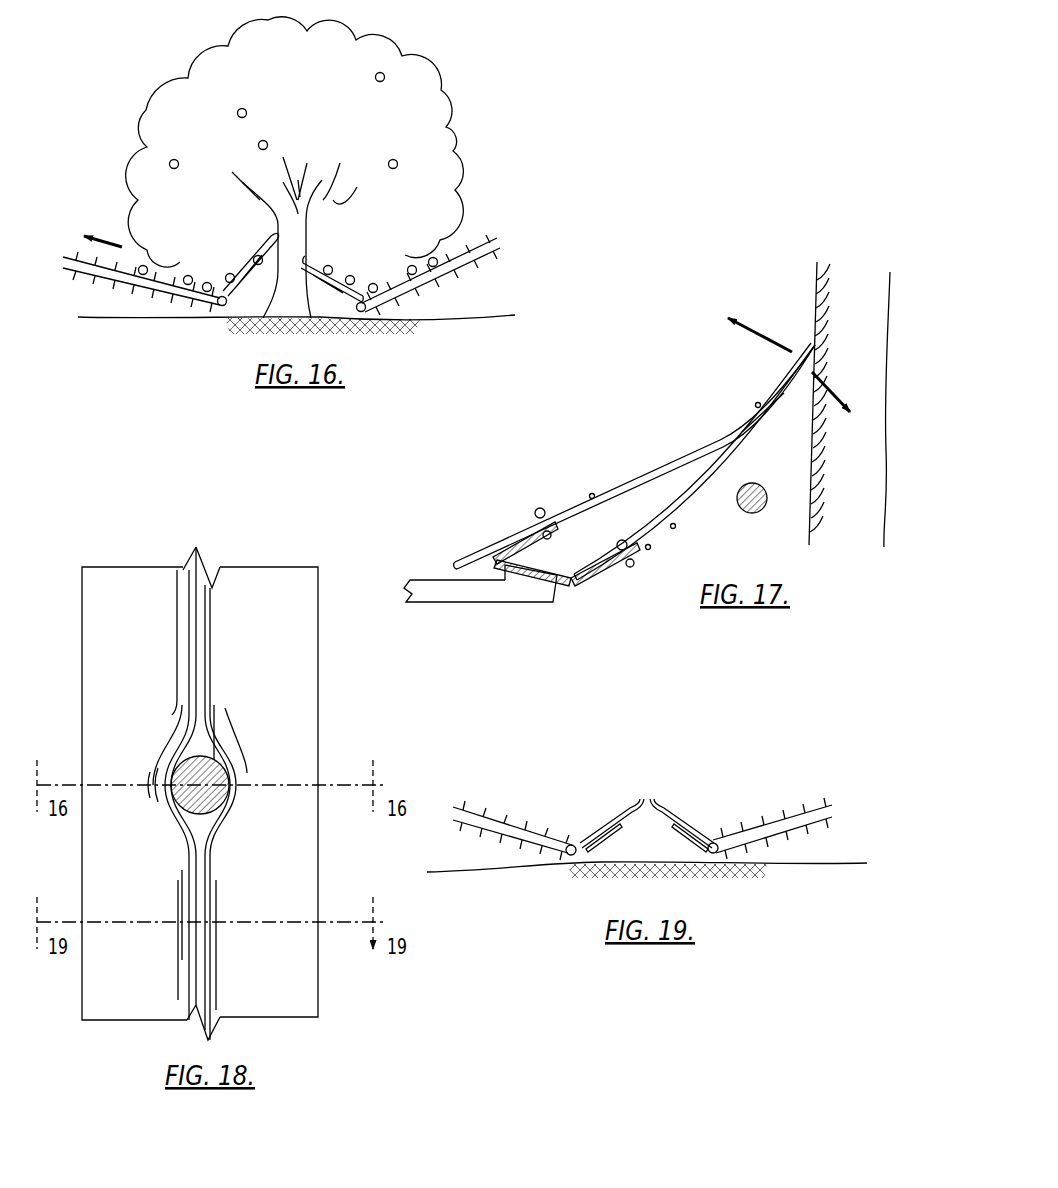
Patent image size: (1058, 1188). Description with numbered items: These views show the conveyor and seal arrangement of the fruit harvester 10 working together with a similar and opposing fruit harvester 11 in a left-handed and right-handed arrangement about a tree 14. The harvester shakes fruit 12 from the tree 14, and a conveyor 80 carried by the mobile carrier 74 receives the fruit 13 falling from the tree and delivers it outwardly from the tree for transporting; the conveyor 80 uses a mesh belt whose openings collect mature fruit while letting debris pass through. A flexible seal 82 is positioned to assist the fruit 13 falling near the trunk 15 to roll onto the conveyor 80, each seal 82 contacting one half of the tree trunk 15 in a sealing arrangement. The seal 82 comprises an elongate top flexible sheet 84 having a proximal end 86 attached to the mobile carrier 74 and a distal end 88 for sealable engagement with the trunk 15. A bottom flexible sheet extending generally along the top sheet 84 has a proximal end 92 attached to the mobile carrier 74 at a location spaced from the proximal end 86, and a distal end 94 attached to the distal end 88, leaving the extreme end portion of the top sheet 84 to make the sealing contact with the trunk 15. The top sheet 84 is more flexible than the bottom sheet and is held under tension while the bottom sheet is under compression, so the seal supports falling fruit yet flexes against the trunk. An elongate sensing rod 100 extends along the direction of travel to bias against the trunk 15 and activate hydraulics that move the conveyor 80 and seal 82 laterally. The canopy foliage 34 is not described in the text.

In FIG. 16, the fruit harvester 10 is at (108, 233).
In FIG. 18, the fruit harvester 10 is at (138, 580).
In FIG. 19, the fruit harvester 10 is at (488, 790).
In FIG. 16, the opposing fruit harvester 11 is at (458, 243).
In FIG. 18, the opposing fruit harvester 11 is at (253, 580).
In FIG. 19, the opposing fruit harvester 11 is at (816, 776).
In FIG. 16, the fruit 12 is at (243, 108).
In FIG. 16, the falling fruit 13 is at (228, 274).
In FIG. 16, the tree 14 is at (424, 102).
In FIG. 16, the trunk 15 is at (282, 249).
In FIG. 17, the trunk 15 is at (866, 289).
In FIG. 18, the trunk 15 is at (203, 758).
In FIG. 16, the tree canopy 34 is at (444, 165).
In FIG. 17, the mobile carrier 74 is at (477, 594).
In FIG. 16, the conveyor 80 is at (445, 278).
In FIG. 19, the conveyor 80 is at (510, 822).
In FIG. 16, the flexible seal 82 is at (315, 245).
In FIG. 17, the flexible seal 82 is at (673, 356).
In FIG. 18, the flexible seal 82 is at (106, 651).
In FIG. 19, the flexible seal 82 is at (651, 790).
In FIG. 17, the top flexible sheet 84 is at (652, 464).
In FIG. 18, the top flexible sheet 84 is at (196, 793).
In FIG. 17, the proximal end of top flexible sheet 86 is at (480, 552).
In FIG. 17, the distal end of top flexible sheet 88 is at (772, 393).
In FIG. 17, the proximal end of bottom flexible sheet 92 is at (650, 552).
In FIG. 17, the distal end of bottom flexible sheet 94 is at (740, 452).
In FIG. 17, the elongate sensing rod 100 is at (738, 513).